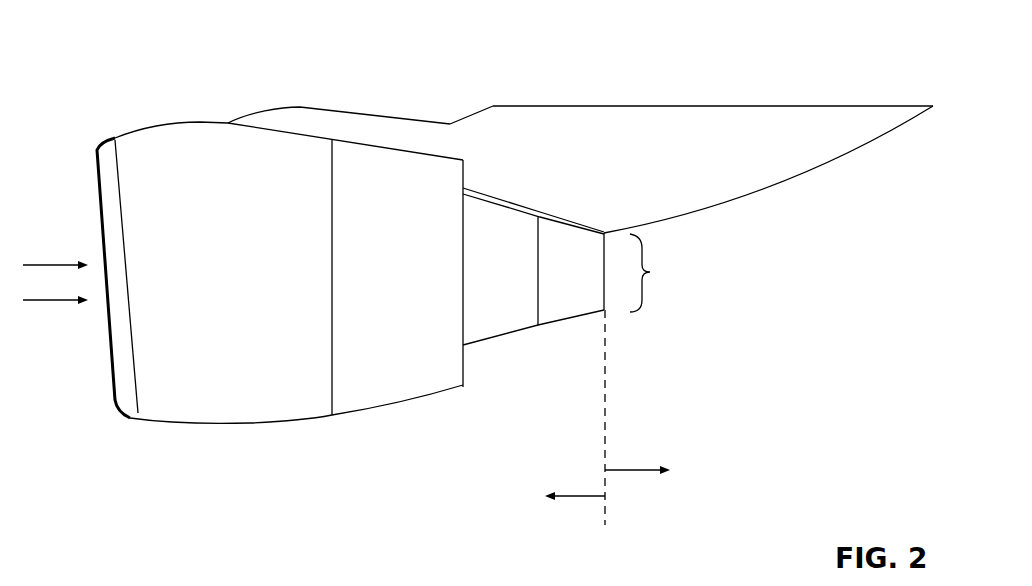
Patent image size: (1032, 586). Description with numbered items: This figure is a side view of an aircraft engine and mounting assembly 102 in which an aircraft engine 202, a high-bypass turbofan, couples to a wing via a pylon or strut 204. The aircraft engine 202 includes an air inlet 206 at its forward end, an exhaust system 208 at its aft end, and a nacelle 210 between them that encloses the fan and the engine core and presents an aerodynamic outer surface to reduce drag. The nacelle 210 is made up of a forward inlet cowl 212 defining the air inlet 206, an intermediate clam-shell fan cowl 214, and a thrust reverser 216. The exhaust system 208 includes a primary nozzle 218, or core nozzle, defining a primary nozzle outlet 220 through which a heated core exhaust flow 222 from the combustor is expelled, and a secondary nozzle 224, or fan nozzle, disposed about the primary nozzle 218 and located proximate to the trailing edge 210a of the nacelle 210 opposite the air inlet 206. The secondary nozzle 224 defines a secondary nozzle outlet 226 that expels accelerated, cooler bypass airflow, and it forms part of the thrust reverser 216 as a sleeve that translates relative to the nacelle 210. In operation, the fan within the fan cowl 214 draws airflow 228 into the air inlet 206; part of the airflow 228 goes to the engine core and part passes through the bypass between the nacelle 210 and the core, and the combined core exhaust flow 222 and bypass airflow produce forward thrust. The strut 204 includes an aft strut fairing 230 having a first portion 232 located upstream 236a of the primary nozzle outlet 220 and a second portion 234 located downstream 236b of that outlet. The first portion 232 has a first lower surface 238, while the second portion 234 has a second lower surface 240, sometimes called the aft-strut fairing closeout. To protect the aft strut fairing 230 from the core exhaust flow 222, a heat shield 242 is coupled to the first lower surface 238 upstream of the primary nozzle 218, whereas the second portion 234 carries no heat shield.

The aircraft engine and mounting assembly 102 is at (328, 38).
The aircraft engine 202 is at (157, 117).
The pylon or strut 204 is at (705, 95).
The air inlet 206 is at (100, 382).
The exhaust system 208 is at (603, 425).
The nacelle 210 is at (192, 465).
The trailing edge of the nacelle 210a is at (463, 382).
The inlet cowl 212 is at (130, 400).
The fan cowl 214 is at (218, 407).
The thrust reverser 216 is at (365, 393).
The primary nozzle 218 is at (592, 330).
The primary nozzle outlet 220 is at (608, 290).
The core exhaust flow 222 is at (650, 272).
The secondary nozzle 224 is at (478, 356).
The secondary nozzle outlet 226 is at (465, 375).
The airflow 228 is at (47, 262).
The aft strut fairing 230 is at (322, 113).
The first portion of the aft strut fairing 232 is at (525, 175).
The second portion of the aft strut fairing 234 is at (762, 157).
The upstream direction 236a is at (577, 498).
The downstream direction 236b is at (637, 473).
The first lower surface 238 is at (558, 217).
The second lower surface 240 is at (822, 163).
The heat shield 242 is at (580, 227).